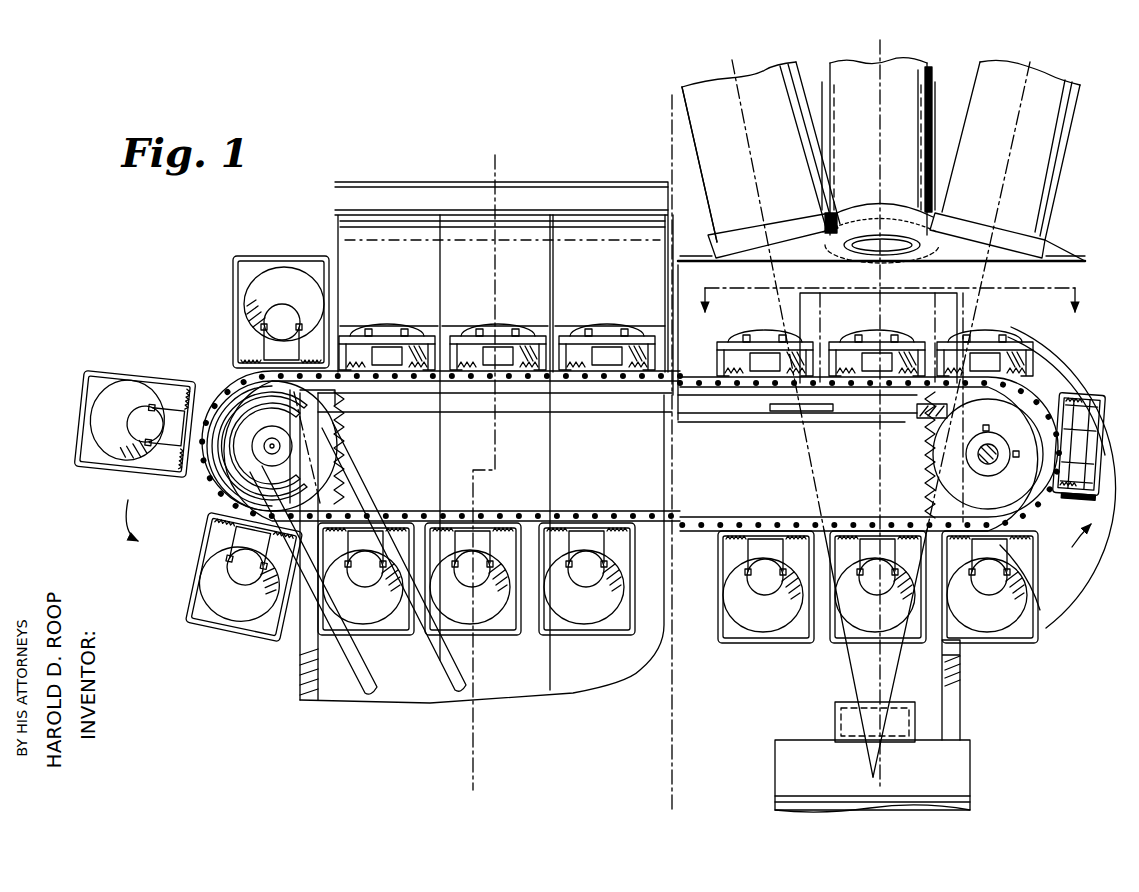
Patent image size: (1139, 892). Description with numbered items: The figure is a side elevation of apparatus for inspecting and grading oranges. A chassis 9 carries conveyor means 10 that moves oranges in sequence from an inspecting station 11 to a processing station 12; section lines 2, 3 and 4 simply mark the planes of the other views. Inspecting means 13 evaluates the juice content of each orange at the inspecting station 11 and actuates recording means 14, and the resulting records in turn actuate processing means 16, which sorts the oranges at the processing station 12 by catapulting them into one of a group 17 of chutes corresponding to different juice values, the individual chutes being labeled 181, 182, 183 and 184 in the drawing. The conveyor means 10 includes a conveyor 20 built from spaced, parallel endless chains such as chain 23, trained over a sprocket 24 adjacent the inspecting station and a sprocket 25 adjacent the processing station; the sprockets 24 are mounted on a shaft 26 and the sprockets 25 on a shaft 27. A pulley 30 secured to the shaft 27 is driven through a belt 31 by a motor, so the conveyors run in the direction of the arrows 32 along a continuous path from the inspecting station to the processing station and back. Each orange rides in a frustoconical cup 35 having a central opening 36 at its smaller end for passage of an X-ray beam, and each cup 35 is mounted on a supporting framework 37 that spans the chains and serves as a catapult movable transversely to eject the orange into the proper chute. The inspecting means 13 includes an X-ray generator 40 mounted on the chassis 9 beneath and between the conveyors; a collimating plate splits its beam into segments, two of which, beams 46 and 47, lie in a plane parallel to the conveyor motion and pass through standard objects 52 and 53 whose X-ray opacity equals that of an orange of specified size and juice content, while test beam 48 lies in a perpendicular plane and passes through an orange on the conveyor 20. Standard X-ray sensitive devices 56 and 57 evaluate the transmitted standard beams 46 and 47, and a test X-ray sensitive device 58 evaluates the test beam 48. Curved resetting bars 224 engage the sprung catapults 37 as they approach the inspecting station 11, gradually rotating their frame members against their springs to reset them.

The section line 2- 2 is at (892, 292).
The section line 3- 3 is at (532, 158).
The section line 4- 4 is at (712, 117).
The chassis 9 is at (302, 702).
The conveyor means 10 is at (1050, 372).
The inspecting station 11 is at (873, 179).
The processing station 12 is at (505, 293).
The inspecting means 13 is at (1070, 178).
The recording means 14 is at (897, 312).
The processing means 16 is at (388, 324).
The group of chutes 17 is at (442, 178).
The conveyor 20 is at (1046, 538).
The endless chain 23 is at (562, 518).
The sprocket 24 is at (930, 488).
The sprocket 25 is at (345, 452).
The shaft 26 is at (991, 456).
The shaft 27 is at (282, 445).
The pulley 30 is at (255, 473).
The belt 31 is at (360, 702).
The arrows 32 is at (608, 528).
The receptacle 35 is at (395, 330).
The central opening 36 is at (258, 318).
The supporting framework 37 is at (172, 376).
The X-ray generator 40 is at (975, 756).
The standard X-ray beam 46 is at (845, 667).
The standard X-ray beam 47 is at (890, 672).
The test X-ray beam 48 is at (872, 689).
The standard object 52 is at (800, 408).
The standard object 53 is at (925, 418).
The standard X-ray sensitive device 56 is at (788, 88).
The standard X-ray sensitive device 57 is at (1040, 86).
The test X-ray sensitive device 58 is at (928, 75).
The compartment 181 is at (358, 212).
The compartment 182 is at (522, 212).
The compartment 183 is at (590, 212).
The compartment 184 is at (666, 195).
The resetting bar 224 is at (1062, 606).